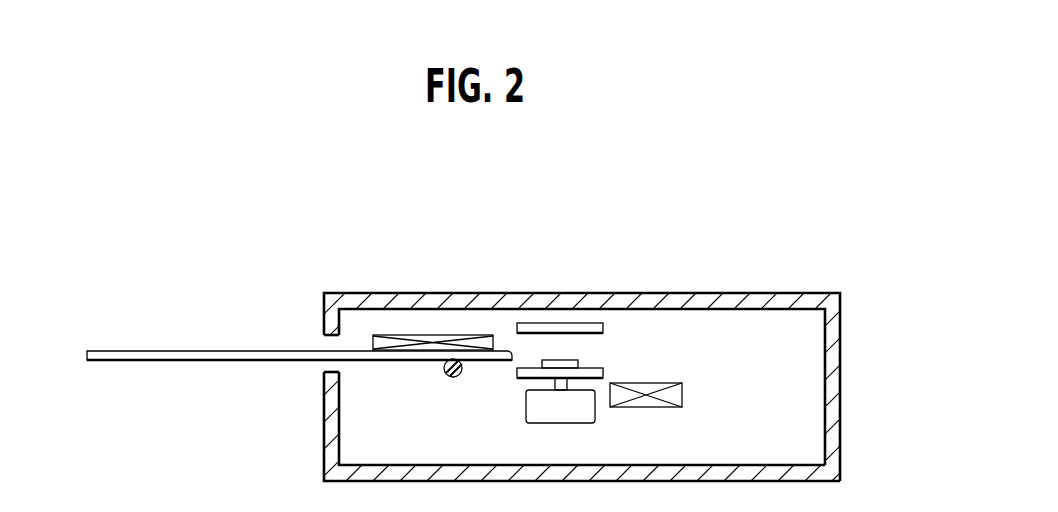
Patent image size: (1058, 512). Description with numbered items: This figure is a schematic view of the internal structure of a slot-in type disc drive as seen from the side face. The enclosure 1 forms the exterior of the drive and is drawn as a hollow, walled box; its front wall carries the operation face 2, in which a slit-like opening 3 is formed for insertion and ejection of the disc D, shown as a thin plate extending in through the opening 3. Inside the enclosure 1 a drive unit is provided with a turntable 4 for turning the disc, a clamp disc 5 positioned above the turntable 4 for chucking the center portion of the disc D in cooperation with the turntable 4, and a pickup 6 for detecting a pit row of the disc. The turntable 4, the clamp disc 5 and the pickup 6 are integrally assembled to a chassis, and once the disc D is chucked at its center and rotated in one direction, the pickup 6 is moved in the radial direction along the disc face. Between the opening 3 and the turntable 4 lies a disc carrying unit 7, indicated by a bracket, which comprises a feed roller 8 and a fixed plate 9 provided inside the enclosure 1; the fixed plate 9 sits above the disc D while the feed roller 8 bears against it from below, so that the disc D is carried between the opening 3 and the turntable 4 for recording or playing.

The enclosure 1 is at (788, 293).
The operation face 2 is at (323, 440).
The opening 3 is at (318, 341).
The turntable 4 is at (574, 360).
The clamp disc 5 is at (540, 323).
The pickup 6 is at (664, 383).
The disc carrying unit 7 is at (482, 237).
The feed roller 8 is at (454, 359).
The fixed plate 9 is at (388, 335).
The disc D is at (118, 351).